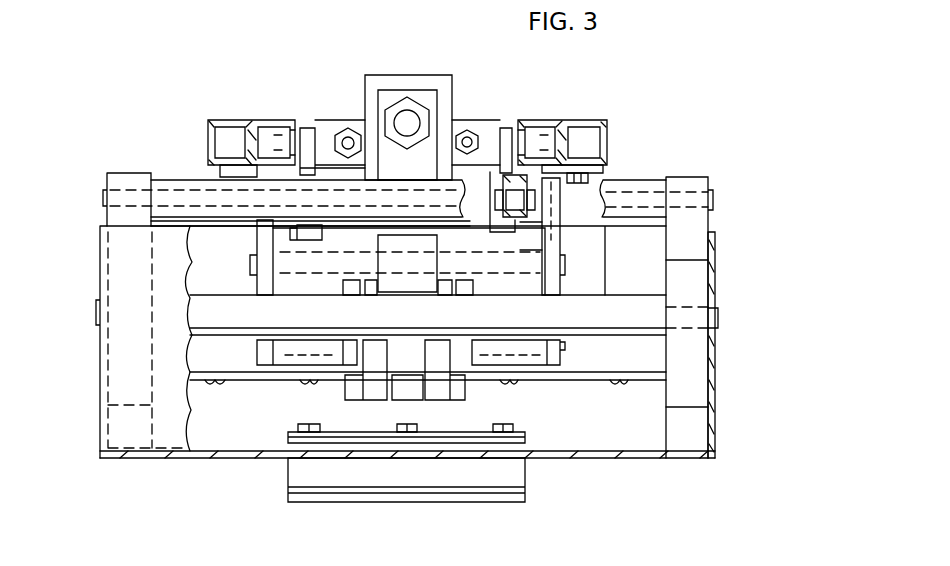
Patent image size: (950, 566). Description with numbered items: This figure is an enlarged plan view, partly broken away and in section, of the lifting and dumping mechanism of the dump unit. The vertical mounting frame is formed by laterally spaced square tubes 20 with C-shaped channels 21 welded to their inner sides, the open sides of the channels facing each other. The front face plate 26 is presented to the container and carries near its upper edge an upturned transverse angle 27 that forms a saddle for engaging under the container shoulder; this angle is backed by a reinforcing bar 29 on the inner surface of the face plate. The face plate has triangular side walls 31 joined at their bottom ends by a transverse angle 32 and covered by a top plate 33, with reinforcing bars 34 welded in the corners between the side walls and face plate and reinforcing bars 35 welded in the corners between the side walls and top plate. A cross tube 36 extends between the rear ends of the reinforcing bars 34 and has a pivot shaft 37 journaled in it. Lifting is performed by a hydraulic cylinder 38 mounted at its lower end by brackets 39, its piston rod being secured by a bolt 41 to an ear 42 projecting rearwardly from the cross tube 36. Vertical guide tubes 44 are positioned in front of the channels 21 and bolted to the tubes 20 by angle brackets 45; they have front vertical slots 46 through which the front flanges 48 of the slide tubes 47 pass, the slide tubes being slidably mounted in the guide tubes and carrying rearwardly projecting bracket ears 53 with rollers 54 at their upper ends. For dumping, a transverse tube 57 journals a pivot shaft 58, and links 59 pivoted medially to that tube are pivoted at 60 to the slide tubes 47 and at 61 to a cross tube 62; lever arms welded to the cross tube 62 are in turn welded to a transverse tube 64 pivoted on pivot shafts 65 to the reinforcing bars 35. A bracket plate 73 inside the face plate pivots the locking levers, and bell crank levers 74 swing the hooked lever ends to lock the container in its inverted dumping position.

The square tubes 20 is at (210, 135).
The C-shaped tubes or channels 21 is at (270, 125).
The front face plate 26 is at (585, 460).
The upturned transverse angle 27 is at (400, 490).
The reinforcing bar 29 is at (527, 438).
The triangular side walls 31 is at (98, 350).
The transverse angle 32 is at (205, 360).
The top plate 33 is at (171, 440).
The reinforcing bars 34 is at (698, 430).
The reinforcing bars 35 is at (692, 272).
The cross tube 36 is at (175, 180).
The pivot shaft 37 is at (714, 205).
The hydraulic cylinder 38 is at (372, 75).
The brackets 39 is at (338, 128).
The bolt 41 is at (420, 97).
The ear 42 is at (421, 171).
The vertical guide tubes 44 is at (492, 212).
The angle brackets 45 is at (597, 173).
The vertical slots 46 is at (300, 230).
The slide tubes 47 is at (545, 215).
The front flanges 48 is at (530, 250).
The bracket ears 53 is at (505, 128).
The rollers 54 is at (278, 137).
The transverse tube 57 is at (265, 262).
The pivot shaft 58 is at (565, 265).
The links 59 is at (257, 240).
The pivot 60 is at (553, 200).
The pivot 61 is at (565, 345).
The cross tube 62 is at (500, 375).
The transverse tube 64 is at (640, 293).
The pivot shafts 65 is at (720, 318).
The bracket plate 73 is at (355, 385).
The bell crank levers 74 is at (378, 398).